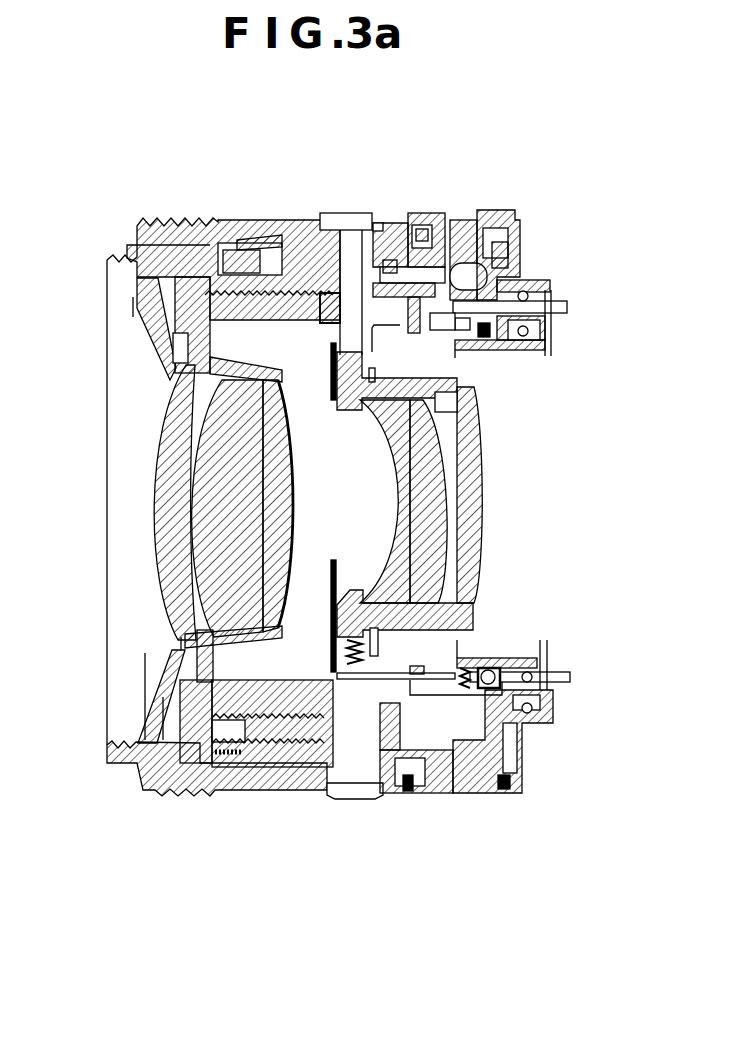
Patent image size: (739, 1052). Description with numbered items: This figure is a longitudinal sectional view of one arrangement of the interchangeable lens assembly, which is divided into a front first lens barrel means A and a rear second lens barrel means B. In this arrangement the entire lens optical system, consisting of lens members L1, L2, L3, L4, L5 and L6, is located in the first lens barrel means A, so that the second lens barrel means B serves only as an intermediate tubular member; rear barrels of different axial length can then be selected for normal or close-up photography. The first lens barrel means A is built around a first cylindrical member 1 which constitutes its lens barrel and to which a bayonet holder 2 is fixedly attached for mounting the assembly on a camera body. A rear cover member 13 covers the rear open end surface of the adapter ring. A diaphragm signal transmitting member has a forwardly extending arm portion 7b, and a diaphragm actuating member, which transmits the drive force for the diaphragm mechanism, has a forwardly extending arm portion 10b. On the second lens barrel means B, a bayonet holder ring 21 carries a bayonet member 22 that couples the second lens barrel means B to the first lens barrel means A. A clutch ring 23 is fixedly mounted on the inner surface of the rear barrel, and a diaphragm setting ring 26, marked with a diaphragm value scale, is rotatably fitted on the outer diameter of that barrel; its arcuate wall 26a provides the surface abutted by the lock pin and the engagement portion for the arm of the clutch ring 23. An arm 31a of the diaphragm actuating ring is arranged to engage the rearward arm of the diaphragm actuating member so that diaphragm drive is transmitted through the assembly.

The first cylindrical member 1 is at (465, 793).
The bayonet holder 2 is at (503, 220).
The arm portion 7b is at (567, 306).
The arm portion 10b is at (570, 680).
The rear cover member 13 is at (522, 247).
The bayonet holder ring 21 is at (432, 213).
The bayonet member 22 is at (445, 225).
The clutch ring 23 is at (408, 320).
The diaphragm setting ring 26 is at (330, 200).
The arcuate wall 26a is at (378, 262).
The arm 31a is at (370, 680).
The first lens barrel means A is at (505, 405).
The second lens barrel means B is at (100, 360).
The lens member L1 is at (162, 515).
The lens member L2 is at (253, 525).
The lens member L3 is at (300, 460).
The lens member L4 is at (383, 430).
The lens member L5 is at (453, 443).
The lens member L6 is at (472, 528).